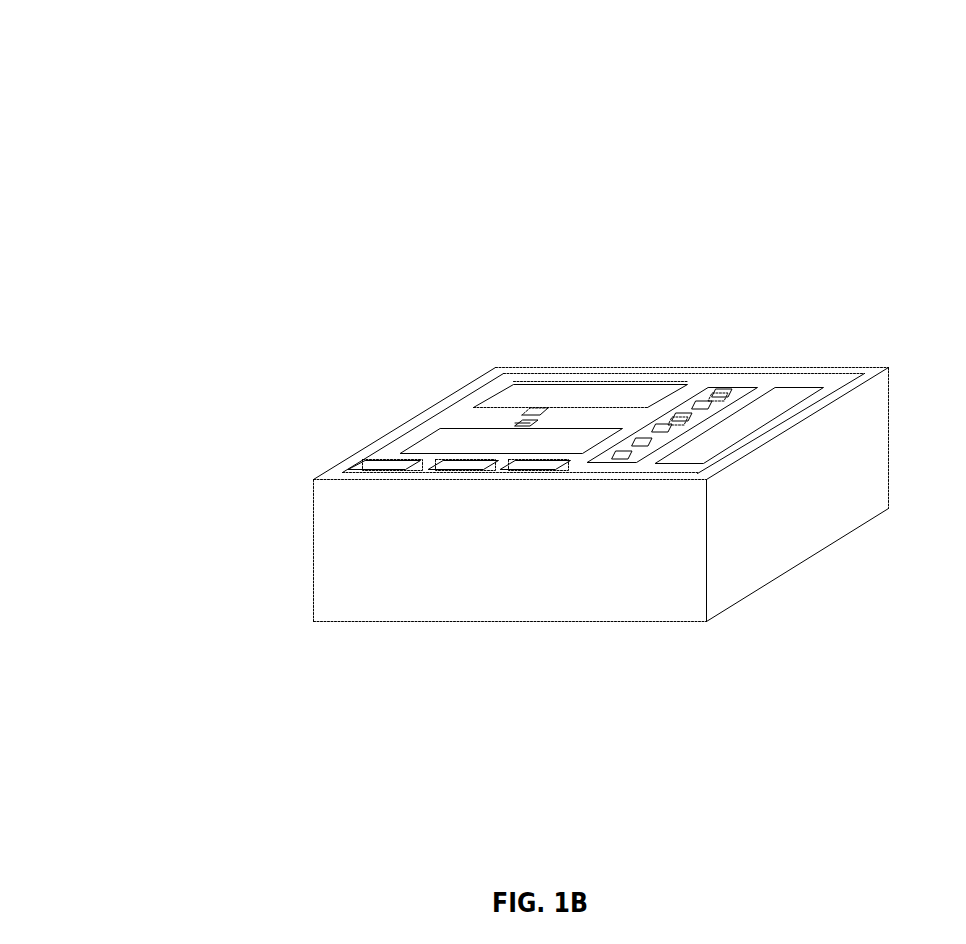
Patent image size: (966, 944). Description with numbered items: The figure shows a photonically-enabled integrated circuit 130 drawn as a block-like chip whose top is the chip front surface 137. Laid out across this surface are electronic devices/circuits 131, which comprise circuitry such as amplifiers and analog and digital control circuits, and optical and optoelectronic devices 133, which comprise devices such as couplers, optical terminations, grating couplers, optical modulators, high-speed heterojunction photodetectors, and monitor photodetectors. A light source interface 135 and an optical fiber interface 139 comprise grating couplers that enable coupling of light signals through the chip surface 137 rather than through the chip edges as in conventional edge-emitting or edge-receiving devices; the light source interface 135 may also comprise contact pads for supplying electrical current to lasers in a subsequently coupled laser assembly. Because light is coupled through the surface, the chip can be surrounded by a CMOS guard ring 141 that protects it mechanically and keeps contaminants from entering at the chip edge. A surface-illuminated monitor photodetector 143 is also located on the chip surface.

The photonically-enabled integrated circuit 130 is at (156, 90).
The electronic devices/circuits 131 is at (530, 470).
The optical and optoelectronic devices 133 is at (578, 402).
The light source interface 135 is at (545, 410).
The chip front surface 137 is at (638, 378).
The optical fiber interface 139 is at (733, 387).
The CMOS guard ring 141 is at (873, 373).
The surface-illuminated monitor photodetector 143 is at (521, 422).